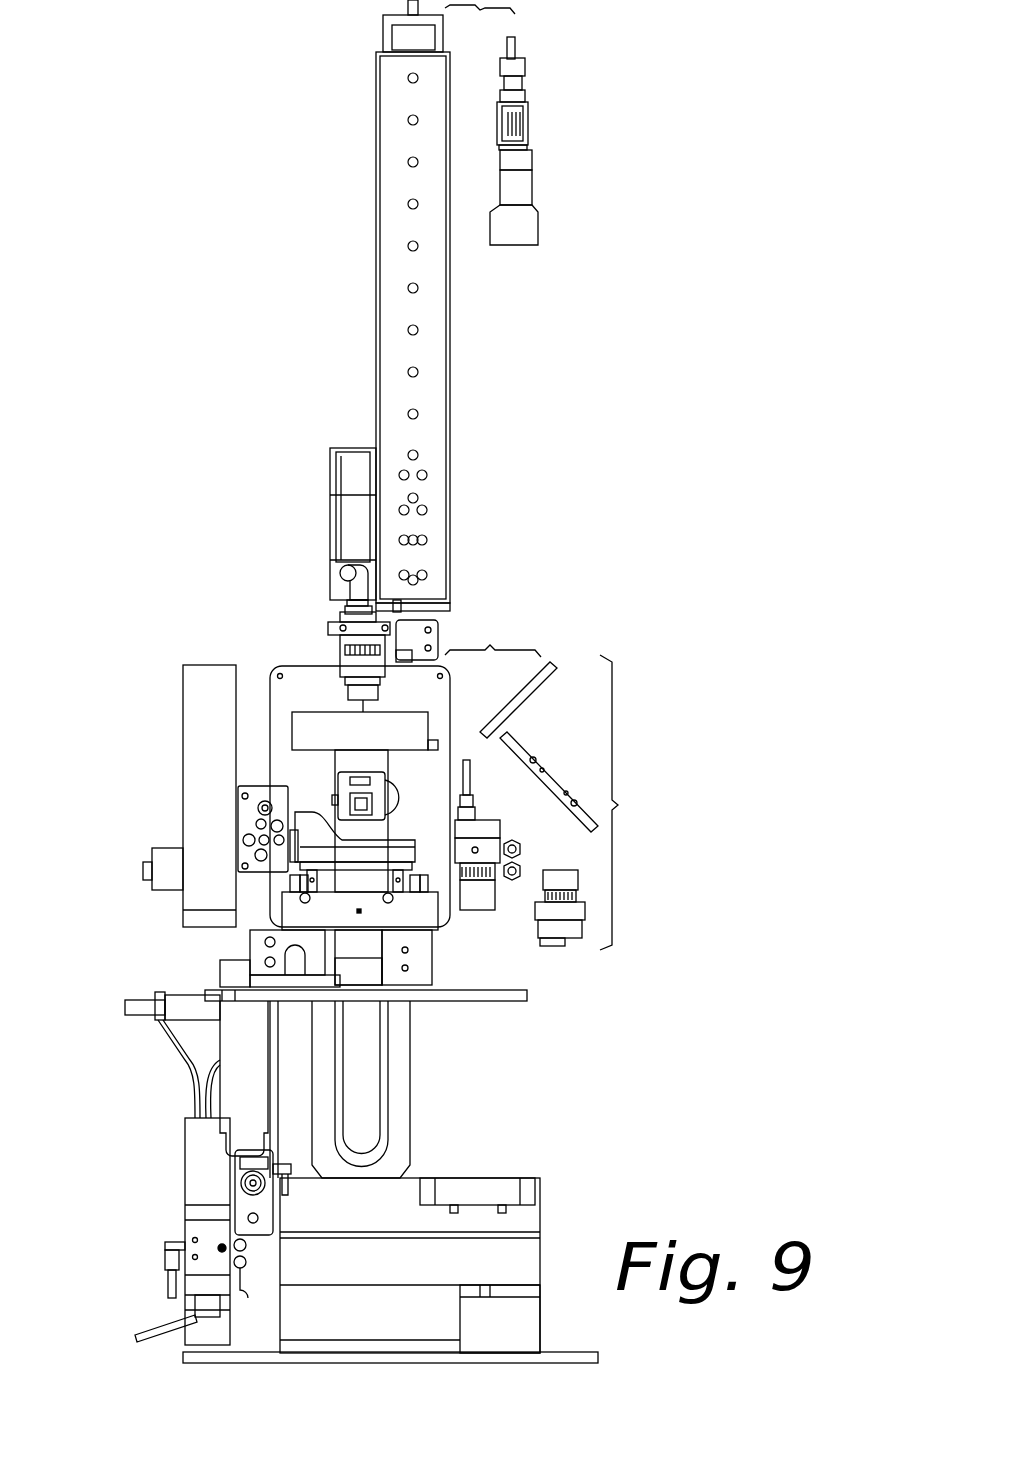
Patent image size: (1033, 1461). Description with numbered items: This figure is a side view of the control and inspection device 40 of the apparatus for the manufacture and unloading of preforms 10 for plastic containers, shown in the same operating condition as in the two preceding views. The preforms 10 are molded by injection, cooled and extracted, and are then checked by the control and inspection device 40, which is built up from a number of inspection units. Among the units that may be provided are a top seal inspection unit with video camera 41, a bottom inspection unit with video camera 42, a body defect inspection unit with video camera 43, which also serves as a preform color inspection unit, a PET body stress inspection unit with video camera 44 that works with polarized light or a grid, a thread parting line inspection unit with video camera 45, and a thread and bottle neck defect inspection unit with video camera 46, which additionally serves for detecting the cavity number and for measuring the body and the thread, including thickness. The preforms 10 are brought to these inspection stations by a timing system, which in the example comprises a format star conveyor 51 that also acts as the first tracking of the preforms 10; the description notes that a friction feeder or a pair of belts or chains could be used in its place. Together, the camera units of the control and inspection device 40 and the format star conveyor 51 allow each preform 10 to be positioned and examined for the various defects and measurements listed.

The preforms 10 is at (245, 1093).
The control and inspection device 40 is at (633, 262).
The top seal inspection unit with video camera 41 is at (348, 600).
The bottom inspection unit with video camera 42 is at (476, 898).
The body defect inspection unit with video camera 43 is at (568, 932).
The PET body stress inspection unit with video camera 44 is at (345, 790).
The thread parting line inspection unit with video camera 45 is at (513, 235).
The thread and bottle neck defect inspection unit with video camera 46 is at (365, 703).
The format star conveyor 51 is at (525, 1001).